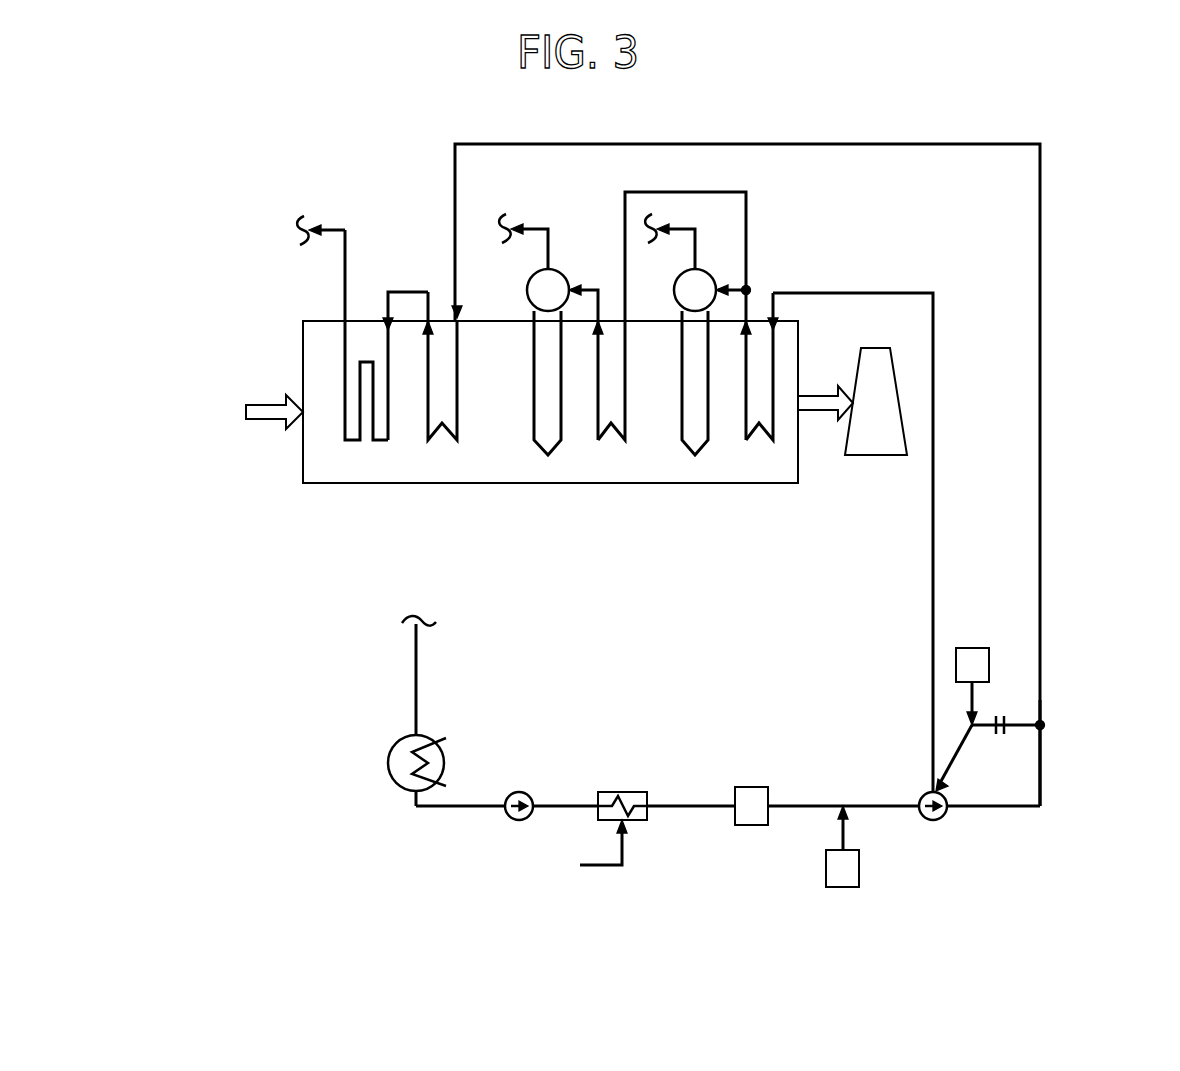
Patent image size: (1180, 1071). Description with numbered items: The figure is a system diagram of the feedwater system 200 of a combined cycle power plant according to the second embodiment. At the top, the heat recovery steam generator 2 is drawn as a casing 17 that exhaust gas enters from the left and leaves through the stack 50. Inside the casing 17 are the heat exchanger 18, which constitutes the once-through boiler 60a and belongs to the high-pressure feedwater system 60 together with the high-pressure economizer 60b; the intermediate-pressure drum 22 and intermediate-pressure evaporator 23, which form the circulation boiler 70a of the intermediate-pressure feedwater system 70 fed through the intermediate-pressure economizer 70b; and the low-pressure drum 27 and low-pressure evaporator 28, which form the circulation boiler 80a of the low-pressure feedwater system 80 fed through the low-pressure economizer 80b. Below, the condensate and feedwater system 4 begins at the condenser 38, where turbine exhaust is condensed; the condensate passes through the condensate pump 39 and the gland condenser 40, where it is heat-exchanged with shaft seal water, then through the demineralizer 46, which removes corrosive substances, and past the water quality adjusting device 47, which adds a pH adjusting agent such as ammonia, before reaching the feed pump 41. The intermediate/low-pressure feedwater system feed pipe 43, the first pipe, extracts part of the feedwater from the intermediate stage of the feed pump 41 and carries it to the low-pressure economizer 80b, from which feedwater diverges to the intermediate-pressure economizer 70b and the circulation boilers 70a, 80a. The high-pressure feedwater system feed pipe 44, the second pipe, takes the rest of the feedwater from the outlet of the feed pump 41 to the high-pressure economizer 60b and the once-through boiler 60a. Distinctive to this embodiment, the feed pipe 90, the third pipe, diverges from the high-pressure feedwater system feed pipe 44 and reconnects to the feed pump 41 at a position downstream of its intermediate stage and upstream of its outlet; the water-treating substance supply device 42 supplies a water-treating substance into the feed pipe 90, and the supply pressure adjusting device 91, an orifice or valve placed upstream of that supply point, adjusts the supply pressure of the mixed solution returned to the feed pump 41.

The heat recovery steam generator 2 is at (216, 303).
The condensate and feedwater system 4 is at (680, 886).
The casing 17 is at (302, 335).
The heat exchanger 18 is at (372, 442).
The intermediate-pressure drum 22 is at (564, 277).
The intermediate-pressure evaporator 23 is at (556, 447).
The low-pressure drum 27 is at (711, 277).
The low-pressure evaporator 28 is at (702, 447).
The condenser 38 is at (408, 735).
The condensate pump 39 is at (517, 822).
The gland condenser 40 is at (640, 822).
The feed pump 41 is at (926, 790).
The water-treating substance supply device 42 is at (975, 648).
The intermediate/low-pressure feedwater system feed pipe 43 is at (933, 630).
The high-pressure feedwater system feed pipe 44 is at (1040, 630).
The demineralizer 46 is at (752, 828).
The water quality adjusting device 47 is at (845, 890).
The stack 50 is at (862, 347).
The high-pressure feedwater system 60 is at (421, 383).
The once-through boiler 60a is at (369, 288).
The high-pressure economizer 60b is at (435, 435).
The intermediate-pressure feedwater system 70 is at (615, 369).
The circulation boiler 70a is at (520, 334).
The intermediate-pressure economizer 70b is at (607, 434).
The low-pressure feedwater system 80 is at (716, 419).
The circulation boiler 80a is at (673, 334).
The low-pressure economizer 80b is at (753, 434).
The feed pipe 90 is at (963, 748).
The supply pressure adjusting device 91 is at (1000, 716).
The feedwater system 200 is at (1119, 186).